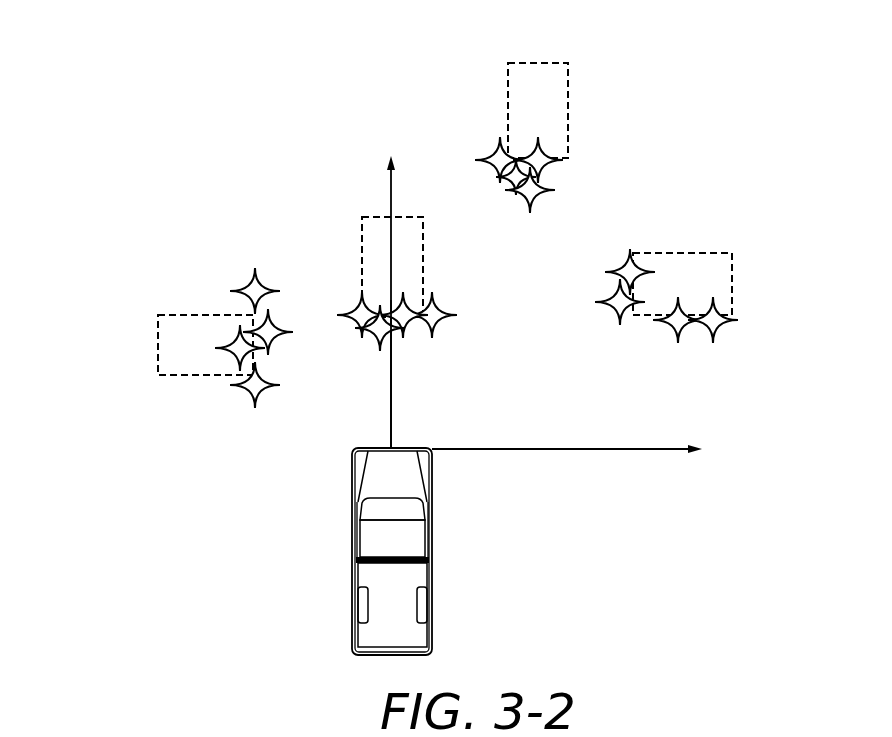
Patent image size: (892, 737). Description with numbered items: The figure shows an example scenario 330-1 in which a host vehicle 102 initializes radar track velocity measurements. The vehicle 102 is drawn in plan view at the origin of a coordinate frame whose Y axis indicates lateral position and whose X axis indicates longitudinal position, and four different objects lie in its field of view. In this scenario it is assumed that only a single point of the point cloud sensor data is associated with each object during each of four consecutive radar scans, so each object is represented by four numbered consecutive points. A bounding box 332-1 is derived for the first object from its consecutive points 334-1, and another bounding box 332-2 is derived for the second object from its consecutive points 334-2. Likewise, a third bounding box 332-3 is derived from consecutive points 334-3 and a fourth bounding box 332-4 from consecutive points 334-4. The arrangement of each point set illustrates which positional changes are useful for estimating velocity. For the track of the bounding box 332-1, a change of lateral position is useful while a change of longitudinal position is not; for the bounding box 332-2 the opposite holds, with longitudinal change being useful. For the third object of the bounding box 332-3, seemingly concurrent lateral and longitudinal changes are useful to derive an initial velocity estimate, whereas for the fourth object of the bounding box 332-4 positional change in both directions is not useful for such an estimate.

The scenario 330-1 is at (130, 72).
The bounding box 332-1 is at (200, 315).
The bounding box 332-2 is at (363, 218).
The third bounding box 332-3 is at (508, 112).
The fourth bounding box 332-4 is at (695, 253).
The consecutive points 334-1 is at (229, 262).
The consecutive points 334-2 is at (409, 366).
The consecutive points 334-3 is at (510, 229).
The consecutive points 334-4 is at (706, 361).
The vehicle 102 is at (352, 525).